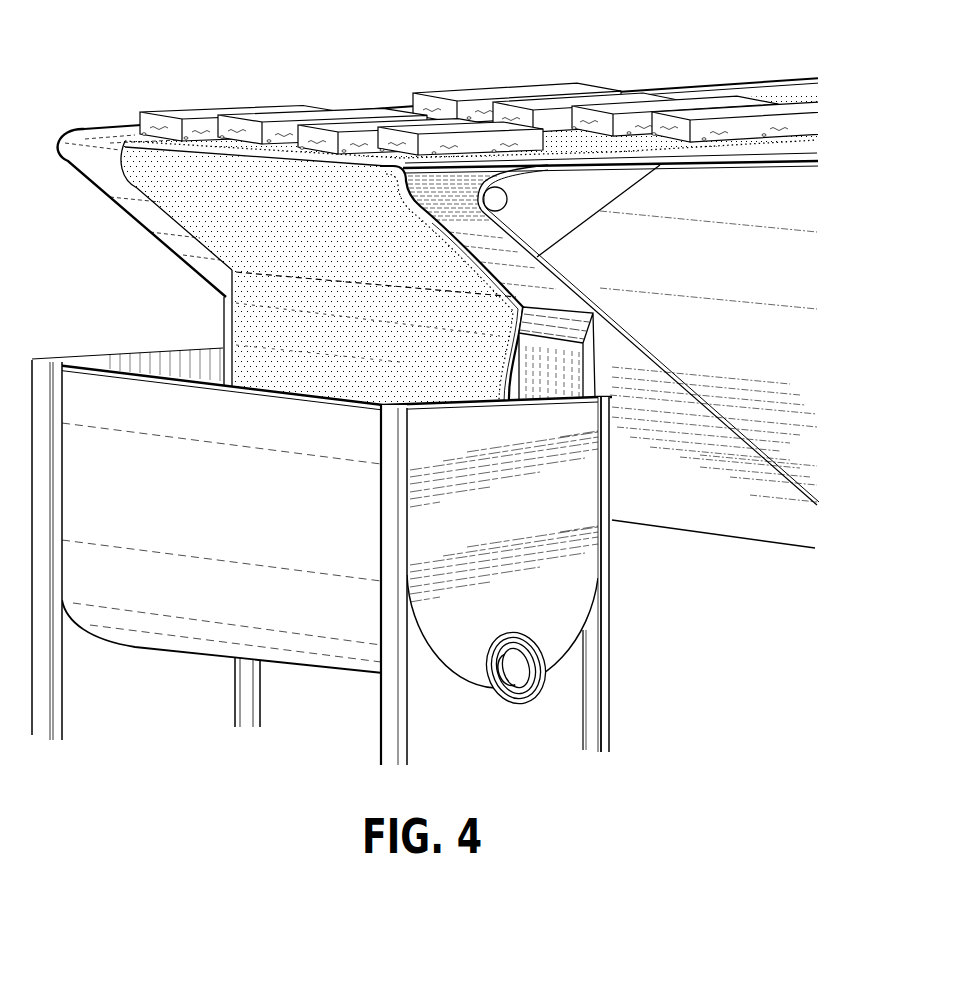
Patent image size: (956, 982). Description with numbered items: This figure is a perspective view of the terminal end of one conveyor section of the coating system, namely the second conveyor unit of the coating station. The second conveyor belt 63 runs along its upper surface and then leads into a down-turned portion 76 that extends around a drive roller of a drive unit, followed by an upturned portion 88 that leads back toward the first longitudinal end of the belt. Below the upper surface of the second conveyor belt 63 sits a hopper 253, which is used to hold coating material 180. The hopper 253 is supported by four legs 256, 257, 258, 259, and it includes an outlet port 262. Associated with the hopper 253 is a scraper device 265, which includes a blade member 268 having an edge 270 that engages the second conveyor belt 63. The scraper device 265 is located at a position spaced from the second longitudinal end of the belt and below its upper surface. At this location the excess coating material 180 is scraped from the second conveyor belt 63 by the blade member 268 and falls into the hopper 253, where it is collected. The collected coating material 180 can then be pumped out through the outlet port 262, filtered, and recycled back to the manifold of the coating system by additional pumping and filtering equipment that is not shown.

The second conveyor belt 63 is at (384, 105).
The coating material 180 is at (585, 145).
The upturned portion 88 is at (778, 212).
The down-turned portion 76 is at (523, 258).
The edge 270 is at (564, 325).
The scraper device 265 is at (626, 314).
The blade member 268 is at (573, 371).
The hopper 253 is at (190, 603).
The leg 256 is at (50, 722).
The leg 257 is at (250, 700).
The leg 258 is at (610, 683).
The leg 259 is at (393, 738).
The outlet port 262 is at (528, 673).